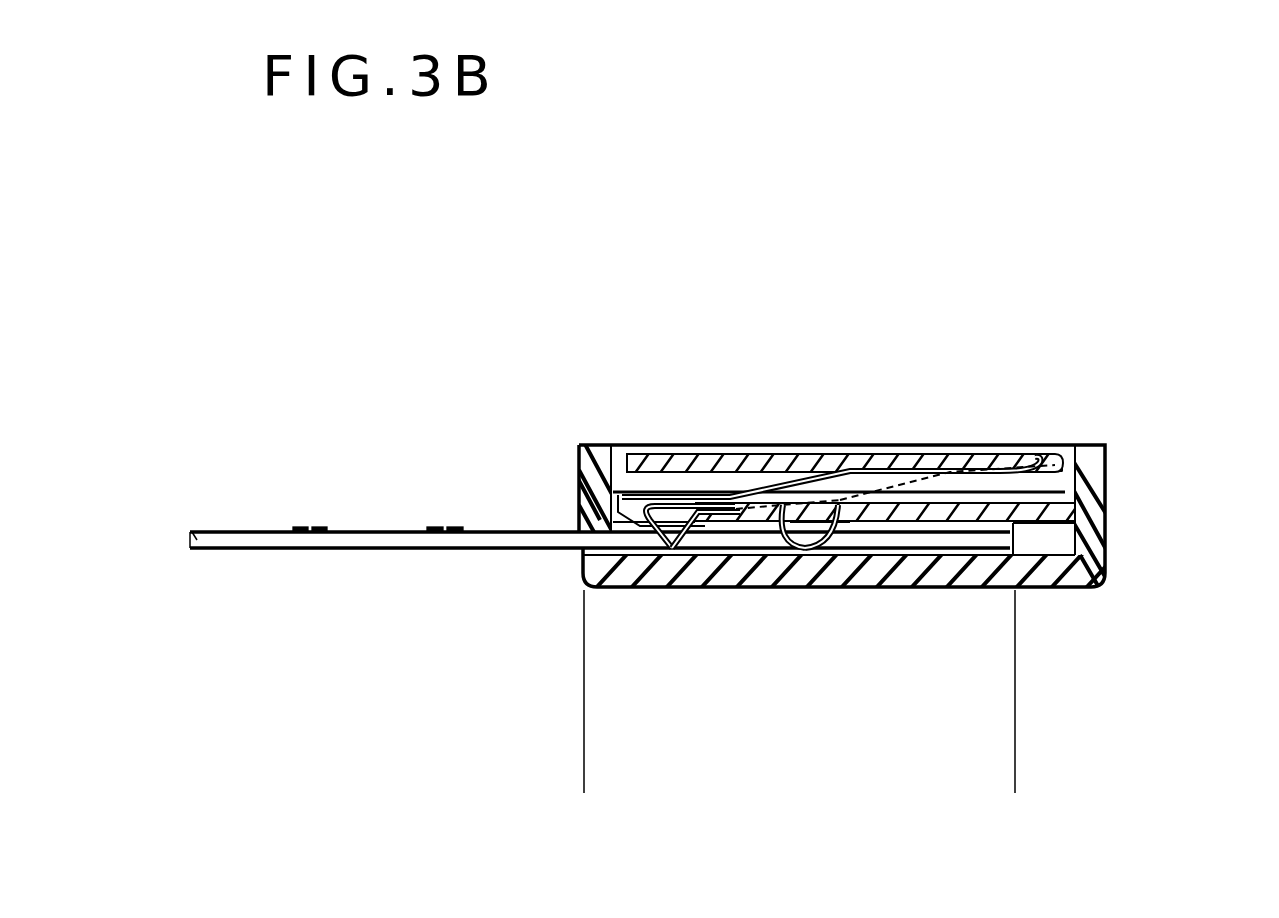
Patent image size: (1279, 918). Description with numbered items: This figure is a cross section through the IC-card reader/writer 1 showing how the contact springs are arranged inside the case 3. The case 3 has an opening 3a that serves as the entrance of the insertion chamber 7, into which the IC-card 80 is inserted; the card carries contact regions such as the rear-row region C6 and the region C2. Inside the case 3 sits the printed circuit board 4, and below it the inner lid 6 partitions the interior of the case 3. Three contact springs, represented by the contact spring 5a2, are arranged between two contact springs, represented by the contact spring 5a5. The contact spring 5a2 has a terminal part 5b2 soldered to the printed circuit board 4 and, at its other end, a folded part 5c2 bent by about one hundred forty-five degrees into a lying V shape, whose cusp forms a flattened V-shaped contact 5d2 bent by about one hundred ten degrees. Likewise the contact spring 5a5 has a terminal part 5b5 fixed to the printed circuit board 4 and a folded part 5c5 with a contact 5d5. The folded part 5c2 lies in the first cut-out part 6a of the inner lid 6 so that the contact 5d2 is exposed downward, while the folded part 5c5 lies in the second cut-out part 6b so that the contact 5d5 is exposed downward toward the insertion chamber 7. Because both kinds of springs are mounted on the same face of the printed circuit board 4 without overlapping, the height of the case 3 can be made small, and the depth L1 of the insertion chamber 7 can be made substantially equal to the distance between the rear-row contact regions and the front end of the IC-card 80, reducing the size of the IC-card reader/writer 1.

The IC-card reader/writer 1 is at (1128, 577).
The case 3 is at (1085, 566).
The opening 3a is at (577, 553).
The printed circuit board 4 is at (664, 460).
The contact spring 5a5 is at (745, 462).
The contact spring 5a2 is at (937, 462).
The terminal part 5b5 is at (895, 468).
The terminal part 5b2 is at (1036, 462).
The folded part 5c5 is at (648, 548).
The folded part 5c2 is at (757, 545).
The contact 5d5 is at (682, 548).
The contact 5d2 is at (818, 547).
The inner lid 6 is at (1052, 505).
The first cut-out part 6a is at (847, 532).
The second cut-out part 6b is at (702, 530).
The insertion chamber 7 is at (955, 540).
The IC-card 80 is at (380, 548).
The contact region C6 is at (306, 527).
The contact pad C2 is at (437, 527).
The depth of insertion chamber L1 is at (1015, 779).